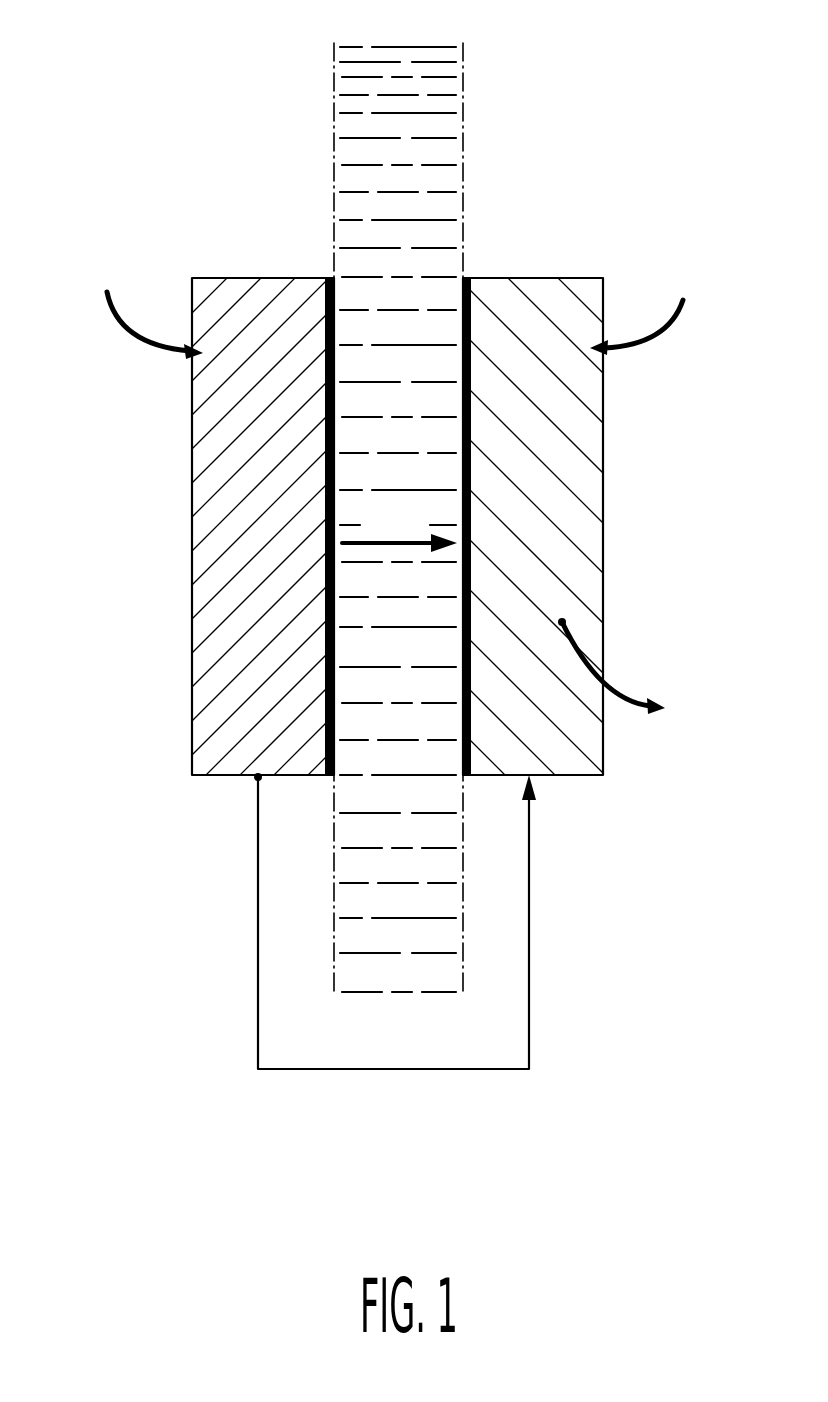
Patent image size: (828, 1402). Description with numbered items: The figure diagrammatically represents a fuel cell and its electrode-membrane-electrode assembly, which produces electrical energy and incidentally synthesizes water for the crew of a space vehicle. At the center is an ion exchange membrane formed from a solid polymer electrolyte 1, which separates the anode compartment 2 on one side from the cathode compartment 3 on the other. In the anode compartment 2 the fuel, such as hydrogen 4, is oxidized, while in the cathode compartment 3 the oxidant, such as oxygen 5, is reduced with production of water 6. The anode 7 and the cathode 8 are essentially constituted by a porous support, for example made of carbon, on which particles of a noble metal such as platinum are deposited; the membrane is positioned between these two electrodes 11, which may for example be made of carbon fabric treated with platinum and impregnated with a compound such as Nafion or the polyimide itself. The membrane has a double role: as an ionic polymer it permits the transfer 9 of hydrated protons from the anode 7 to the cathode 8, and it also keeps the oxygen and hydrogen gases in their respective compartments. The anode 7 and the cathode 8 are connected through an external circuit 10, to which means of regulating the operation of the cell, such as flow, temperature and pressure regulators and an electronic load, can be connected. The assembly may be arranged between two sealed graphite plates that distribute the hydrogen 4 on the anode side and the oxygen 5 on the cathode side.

The solid polymer electrolyte membrane 1 is at (352, 125).
The anode compartment 2 is at (108, 865).
The cathode compartment 3 is at (689, 866).
The hydrogen 4 is at (143, 309).
The oxygen 5 is at (642, 306).
The water 6 is at (623, 674).
The anode 7 is at (225, 542).
The cathode 8 is at (573, 525).
The transfer of hydrated protons 9 is at (411, 523).
The external circuit 10 is at (397, 1072).
The electrodes 11 is at (335, 292).